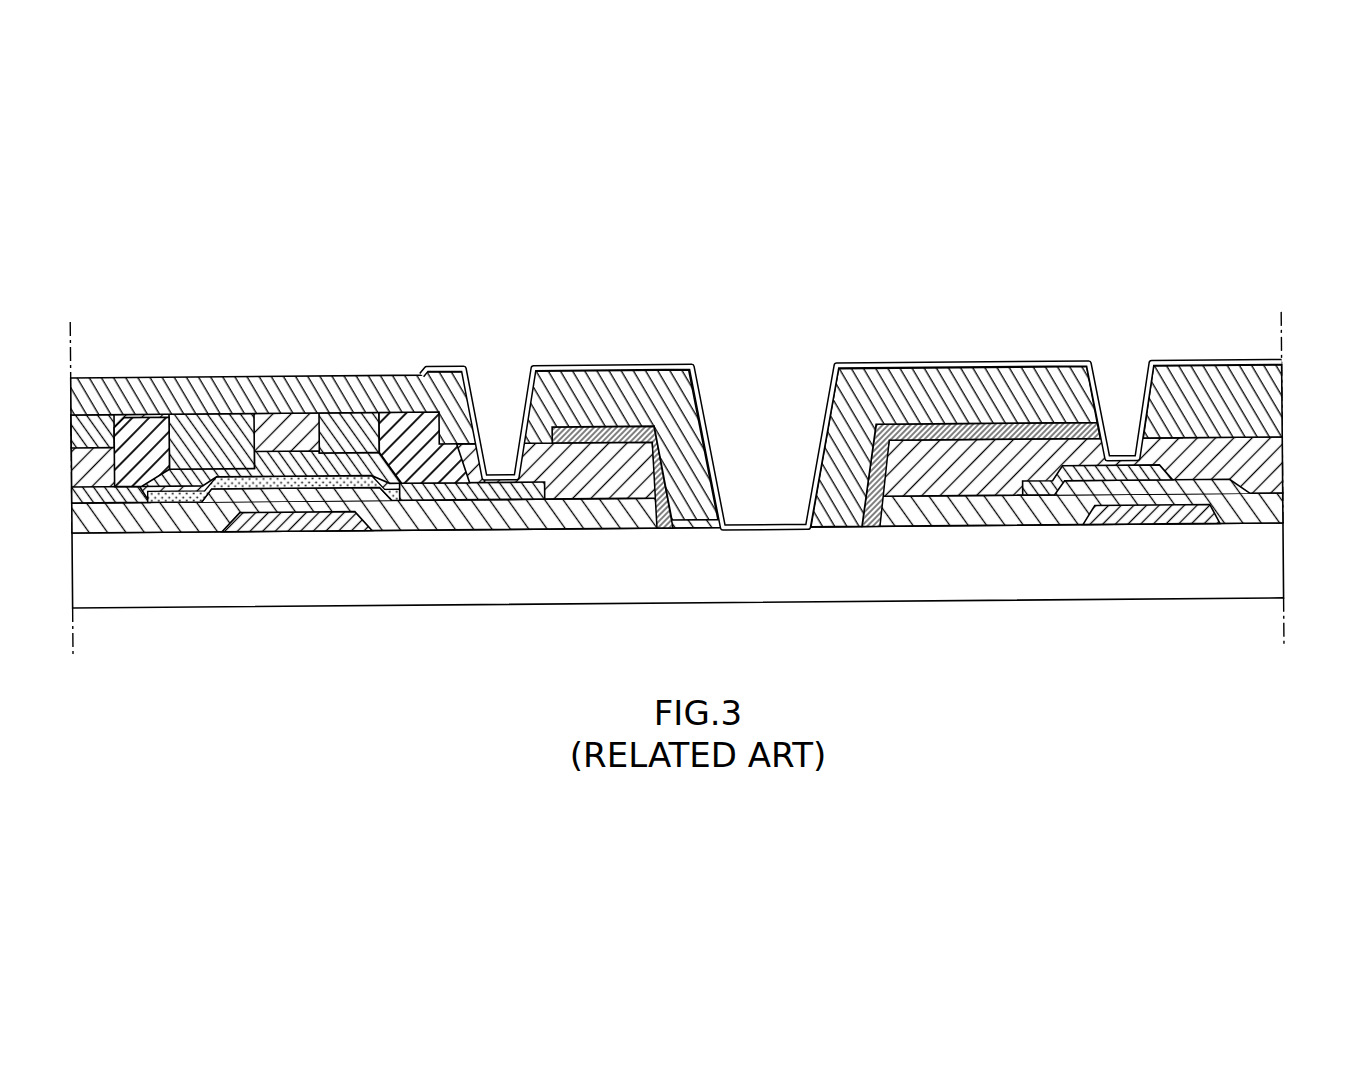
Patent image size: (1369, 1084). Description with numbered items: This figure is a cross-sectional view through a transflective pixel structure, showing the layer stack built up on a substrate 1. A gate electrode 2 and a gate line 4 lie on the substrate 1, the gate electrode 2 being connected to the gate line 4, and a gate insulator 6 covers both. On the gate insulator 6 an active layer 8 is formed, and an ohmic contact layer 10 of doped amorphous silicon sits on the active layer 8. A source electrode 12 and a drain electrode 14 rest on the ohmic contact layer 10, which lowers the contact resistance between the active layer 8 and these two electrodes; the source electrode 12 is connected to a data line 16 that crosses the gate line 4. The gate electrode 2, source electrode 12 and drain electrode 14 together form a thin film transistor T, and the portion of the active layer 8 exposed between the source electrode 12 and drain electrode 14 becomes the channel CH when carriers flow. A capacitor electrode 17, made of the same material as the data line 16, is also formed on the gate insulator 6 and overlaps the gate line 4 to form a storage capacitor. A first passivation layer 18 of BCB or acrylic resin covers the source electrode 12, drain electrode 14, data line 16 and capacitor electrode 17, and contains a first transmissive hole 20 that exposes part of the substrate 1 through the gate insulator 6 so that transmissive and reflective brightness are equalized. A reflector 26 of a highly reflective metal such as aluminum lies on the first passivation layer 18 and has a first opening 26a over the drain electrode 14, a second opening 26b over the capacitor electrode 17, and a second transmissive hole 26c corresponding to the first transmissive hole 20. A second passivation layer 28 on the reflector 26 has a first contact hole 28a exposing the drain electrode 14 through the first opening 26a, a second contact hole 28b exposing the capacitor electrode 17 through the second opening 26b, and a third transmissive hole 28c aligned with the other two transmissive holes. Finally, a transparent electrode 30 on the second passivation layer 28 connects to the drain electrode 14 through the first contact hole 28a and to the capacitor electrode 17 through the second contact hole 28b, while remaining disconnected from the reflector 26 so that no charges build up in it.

The substrate 1 is at (547, 594).
The gate electrode 2 is at (296, 535).
The gate line 4 is at (1195, 530).
The gate insulator 6 is at (420, 518).
The active layer 8 is at (176, 498).
The ohmic contact layer 10 is at (212, 445).
The source electrode 12 is at (160, 450).
The drain electrode 14 is at (382, 422).
The data line 16 is at (108, 445).
The capacitor electrode 17 is at (1130, 490).
The first passivation layer 18 is at (232, 432).
The first transmissive hole 20 is at (762, 484).
The reflector 26 is at (421, 400).
The first opening 26a is at (553, 378).
The second opening 26b is at (1160, 372).
The second transmissive hole 26c is at (675, 536).
The second passivation layer 28 is at (279, 395).
The first contact hole 28a is at (500, 406).
The second contact hole 28b is at (1120, 412).
The third transmissive hole 28c is at (718, 536).
The transparent electrode 30 is at (700, 392).
The channel CH is at (320, 447).
The thin film transistor T is at (487, 566).